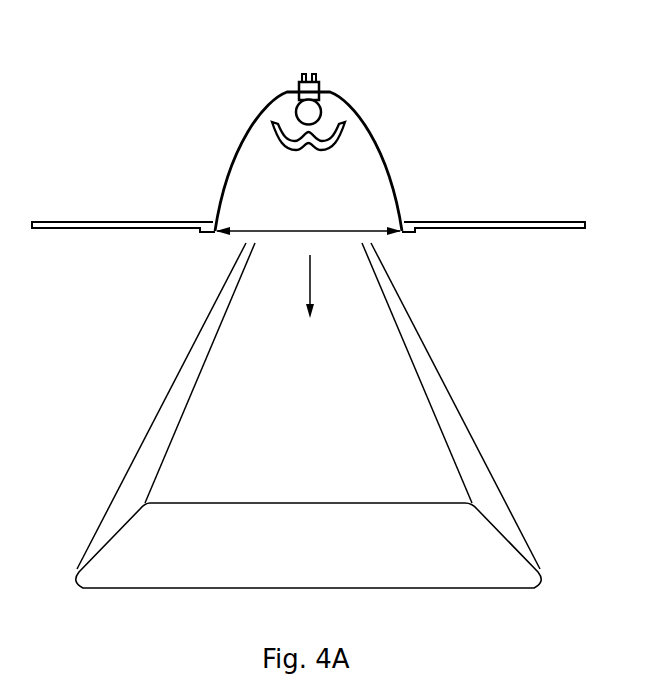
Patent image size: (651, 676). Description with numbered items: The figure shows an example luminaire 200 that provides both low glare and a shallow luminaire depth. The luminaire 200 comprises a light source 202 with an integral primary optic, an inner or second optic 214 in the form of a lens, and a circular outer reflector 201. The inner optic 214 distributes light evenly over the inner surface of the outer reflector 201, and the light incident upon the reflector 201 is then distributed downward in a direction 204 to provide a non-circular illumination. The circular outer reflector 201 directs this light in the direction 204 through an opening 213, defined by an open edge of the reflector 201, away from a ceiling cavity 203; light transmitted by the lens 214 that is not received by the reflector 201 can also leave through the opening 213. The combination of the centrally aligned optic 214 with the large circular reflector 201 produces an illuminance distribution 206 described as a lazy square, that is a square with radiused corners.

The luminaire 200 is at (255, 77).
The circular outer reflector 201 is at (237, 148).
The light source 202 is at (307, 112).
The inner optic 214 is at (333, 145).
The ceiling cavity 203 is at (124, 212).
The opening 213 is at (308, 219).
The direction 204 is at (308, 406).
The illuminance distribution 206 is at (289, 558).